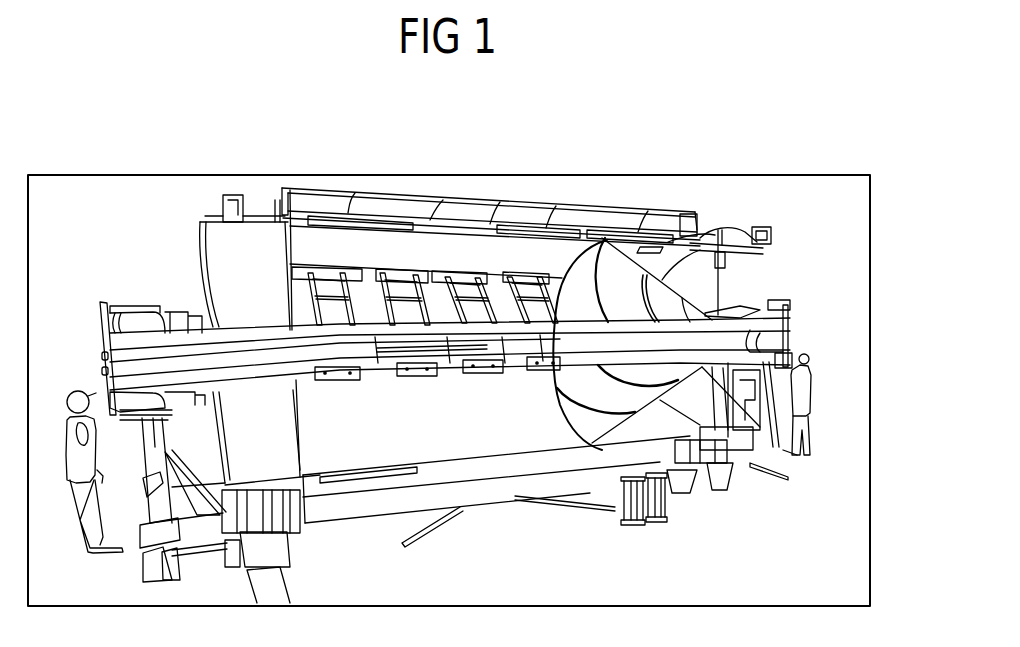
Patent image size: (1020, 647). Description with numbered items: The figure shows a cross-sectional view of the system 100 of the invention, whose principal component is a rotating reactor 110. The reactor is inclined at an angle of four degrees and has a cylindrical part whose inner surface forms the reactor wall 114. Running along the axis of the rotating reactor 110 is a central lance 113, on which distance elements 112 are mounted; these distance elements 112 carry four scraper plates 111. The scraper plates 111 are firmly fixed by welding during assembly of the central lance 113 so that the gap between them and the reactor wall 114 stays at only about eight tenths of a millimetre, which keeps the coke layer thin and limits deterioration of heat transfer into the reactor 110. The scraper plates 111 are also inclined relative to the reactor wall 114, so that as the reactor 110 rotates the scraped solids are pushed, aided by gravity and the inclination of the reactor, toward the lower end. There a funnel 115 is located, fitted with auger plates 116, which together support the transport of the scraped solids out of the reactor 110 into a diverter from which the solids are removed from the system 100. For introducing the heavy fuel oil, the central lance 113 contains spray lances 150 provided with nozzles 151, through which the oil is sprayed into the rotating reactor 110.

The system 100 is at (604, 181).
The rotating reactor 110 is at (703, 290).
The scraper plates 111 is at (398, 273).
The distance elements 112 is at (493, 298).
The central lance 113 is at (790, 316).
The cylindrical part / reactor wall 114 is at (525, 410).
The funnel 115 is at (733, 477).
The auger plates 116 is at (626, 412).
The spray lances 150 is at (394, 358).
The nozzles 151 is at (485, 350).